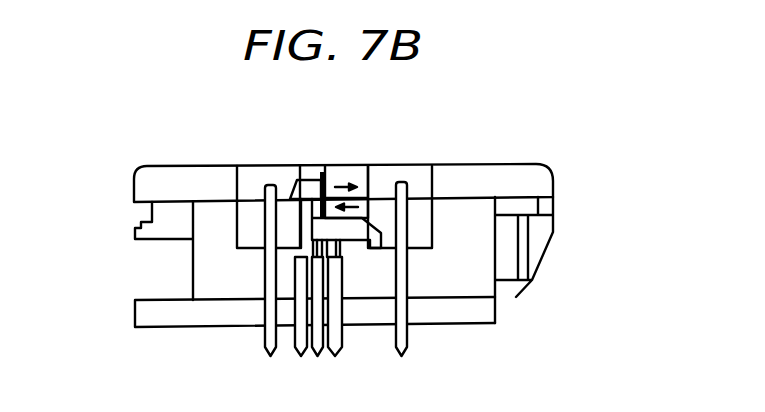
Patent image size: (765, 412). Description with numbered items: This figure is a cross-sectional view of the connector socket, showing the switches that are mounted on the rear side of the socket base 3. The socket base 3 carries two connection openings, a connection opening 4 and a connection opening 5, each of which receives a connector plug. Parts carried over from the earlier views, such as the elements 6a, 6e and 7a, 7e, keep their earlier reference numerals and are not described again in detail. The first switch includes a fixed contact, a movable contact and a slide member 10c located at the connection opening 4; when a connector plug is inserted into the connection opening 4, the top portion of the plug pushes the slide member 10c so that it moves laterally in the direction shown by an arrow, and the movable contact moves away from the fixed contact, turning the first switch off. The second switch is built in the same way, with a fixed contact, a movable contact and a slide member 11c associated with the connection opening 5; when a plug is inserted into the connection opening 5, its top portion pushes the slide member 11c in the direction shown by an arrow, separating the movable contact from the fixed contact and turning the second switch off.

The socket base 3 is at (527, 165).
The connection opening 4 is at (298, 179).
The connection opening 5 is at (521, 219).
The contact pin 6a is at (270, 270).
The contact pin 6e is at (266, 185).
The contact pin 7a is at (401, 269).
The contact pin 7e is at (401, 269).
The slide member 10c is at (308, 190).
The slide member 11c is at (371, 228).